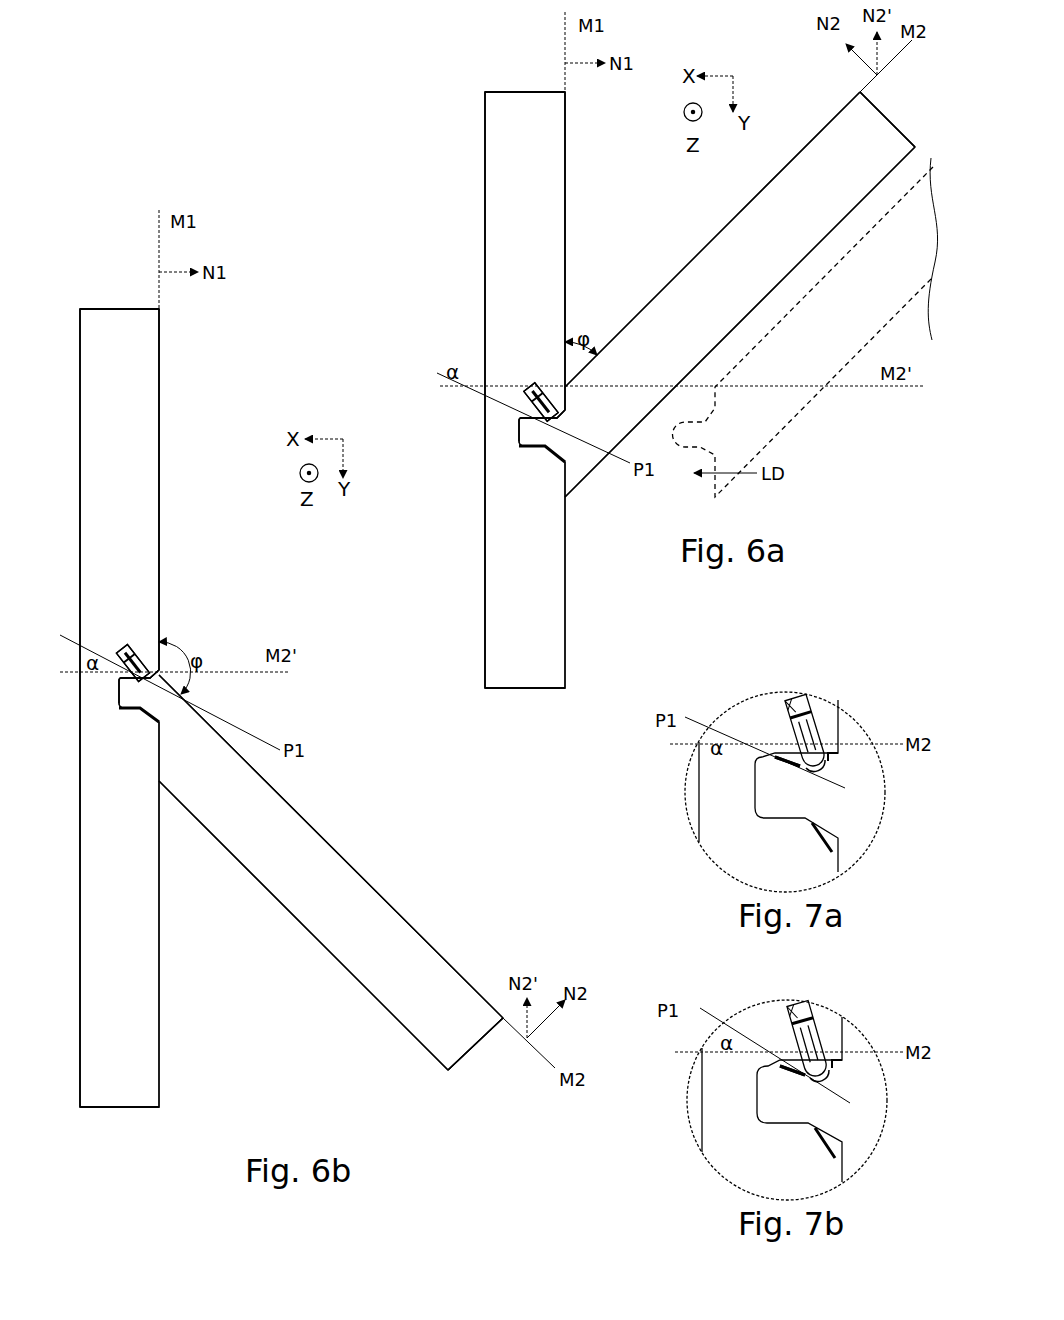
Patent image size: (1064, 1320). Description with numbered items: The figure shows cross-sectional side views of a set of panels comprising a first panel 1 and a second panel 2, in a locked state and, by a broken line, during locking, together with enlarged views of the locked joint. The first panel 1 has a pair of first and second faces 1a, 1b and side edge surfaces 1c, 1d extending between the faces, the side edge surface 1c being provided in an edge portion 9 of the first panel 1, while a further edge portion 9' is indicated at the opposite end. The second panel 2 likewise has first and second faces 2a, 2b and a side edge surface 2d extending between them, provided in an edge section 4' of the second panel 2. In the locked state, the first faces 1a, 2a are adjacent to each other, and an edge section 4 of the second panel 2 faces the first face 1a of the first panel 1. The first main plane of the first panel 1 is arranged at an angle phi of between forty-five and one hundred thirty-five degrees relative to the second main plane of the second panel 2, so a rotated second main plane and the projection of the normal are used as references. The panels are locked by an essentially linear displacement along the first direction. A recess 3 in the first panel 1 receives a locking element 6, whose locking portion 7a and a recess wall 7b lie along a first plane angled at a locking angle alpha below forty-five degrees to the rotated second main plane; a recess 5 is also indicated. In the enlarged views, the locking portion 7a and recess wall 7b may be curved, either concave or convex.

In FIG. 6A, the first panel 1 is at (525, 390).
In FIG. 6B, the first panel 1 is at (119, 708).
In FIG. 7A, the first panel 1 is at (768, 786).
In FIG. 7B, the first panel 1 is at (772, 1099).
In FIG. 6A, the first face of first panel 1a is at (565, 148).
In FIG. 6B, the first face of first panel 1a is at (159, 381).
In FIG. 6A, the second face of first panel 1b is at (485, 128).
In FIG. 6B, the second face of first panel 1b is at (80, 362).
In FIG. 6A, the side edge surface of first panel 1c is at (528, 688).
In FIG. 6B, the side edge surface of first panel 1c is at (130, 1108).
In FIG. 6A, the side edge surface of first panel 1d is at (520, 92).
In FIG. 6B, the side edge surface of first panel 1d is at (112, 309).
In FIG. 6A, the second panel 2 is at (740, 294).
In FIG. 6B, the second panel 2 is at (331, 872).
In FIG. 7A, the second panel 2 is at (821, 802).
In FIG. 7B, the second panel 2 is at (824, 1109).
In FIG. 6A, the first face of second panel 2a is at (827, 125).
In FIG. 6B, the first face of second panel 2a is at (472, 988).
In FIG. 6A, the second face of second panel 2b is at (880, 182).
In FIG. 6B, the second face of second panel 2b is at (412, 1034).
In FIG. 6A, the side edge surface of second panel 2d is at (897, 129).
In FIG. 6B, the side edge surface of second panel 2d is at (468, 1052).
In FIG. 6A, the notch in first plate 3 is at (517, 420).
In FIG. 6B, the notch in first plate 3 is at (117, 681).
In FIG. 6A, the edge section of second panel 4 is at (536, 469).
In FIG. 6B, the edge section of second panel 4 is at (137, 730).
In FIG. 6A, the edge section 4' is at (902, 104).
In FIG. 6B, the edge section 4' is at (493, 1052).
In FIG. 6A, the recess for fastener 5 is at (527, 392).
In FIG. 6B, the recess for fastener 5 is at (122, 652).
In FIG. 6A, the fastener 6 is at (541, 384).
In FIG. 6B, the fastener 6 is at (136, 645).
In FIG. 7A, the fastener 6 is at (796, 698).
In FIG. 7B, the fastener 6 is at (798, 1006).
In FIG. 7A, the locking portion 7a is at (828, 770).
In FIG. 7B, the locking portion 7a is at (830, 1078).
In FIG. 7A, the recess wall 7b is at (790, 756).
In FIG. 7B, the recess wall 7b is at (792, 1064).
In FIG. 6A, the edge portion of first panel 9 is at (511, 418).
In FIG. 6B, the edge portion of first panel 9 is at (113, 738).
In FIG. 6A, the edge portion 9' is at (525, 59).
In FIG. 6B, the edge portion 9' is at (119, 266).